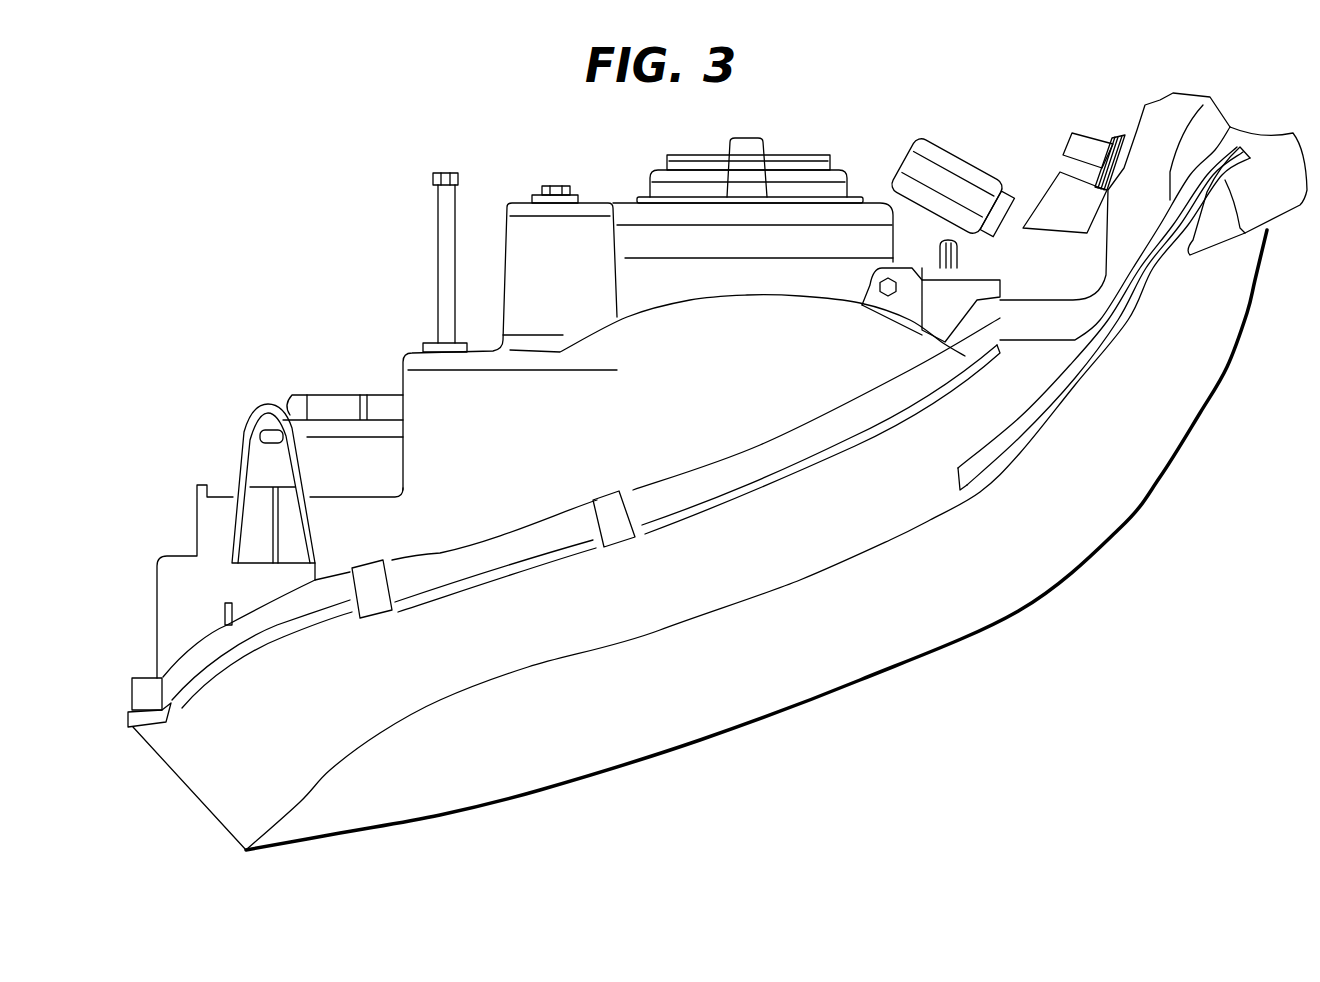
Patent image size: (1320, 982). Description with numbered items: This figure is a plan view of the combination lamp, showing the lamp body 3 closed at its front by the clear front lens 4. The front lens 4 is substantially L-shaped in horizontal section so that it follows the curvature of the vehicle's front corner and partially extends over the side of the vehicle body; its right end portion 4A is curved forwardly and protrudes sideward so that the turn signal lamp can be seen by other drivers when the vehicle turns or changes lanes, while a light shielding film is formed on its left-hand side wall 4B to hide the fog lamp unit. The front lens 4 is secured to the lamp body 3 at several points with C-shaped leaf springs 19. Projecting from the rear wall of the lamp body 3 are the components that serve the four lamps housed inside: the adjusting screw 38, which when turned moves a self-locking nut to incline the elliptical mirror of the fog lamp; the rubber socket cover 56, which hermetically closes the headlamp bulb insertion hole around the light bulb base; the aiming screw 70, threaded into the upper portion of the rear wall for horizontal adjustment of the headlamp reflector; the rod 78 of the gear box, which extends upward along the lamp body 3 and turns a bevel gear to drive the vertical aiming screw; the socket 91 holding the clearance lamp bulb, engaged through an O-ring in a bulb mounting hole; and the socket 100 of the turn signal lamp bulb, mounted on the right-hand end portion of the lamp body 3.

The lamp body 3 is at (400, 355).
The front lens 4 is at (838, 668).
The right end portion of the front lens 4A is at (1277, 160).
The left-hand side wall of the front lens 4B is at (173, 770).
The C-shaped leaf springs 19 is at (372, 562).
The adjusting screw 38 is at (433, 210).
The socket cover 56 is at (877, 213).
The aiming screw 70 is at (553, 185).
The rod 78 is at (879, 285).
The socket 91 is at (960, 160).
The socket 100 is at (1078, 140).